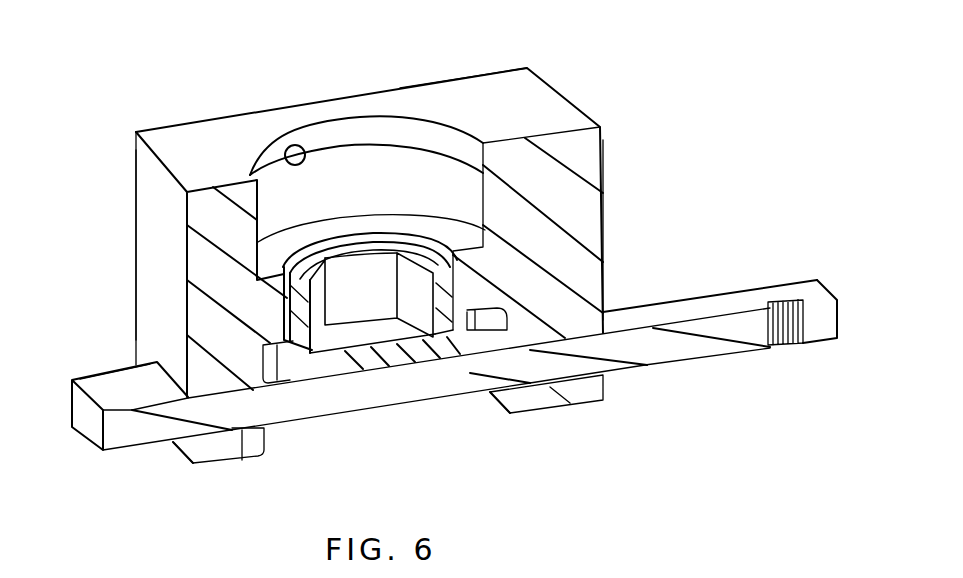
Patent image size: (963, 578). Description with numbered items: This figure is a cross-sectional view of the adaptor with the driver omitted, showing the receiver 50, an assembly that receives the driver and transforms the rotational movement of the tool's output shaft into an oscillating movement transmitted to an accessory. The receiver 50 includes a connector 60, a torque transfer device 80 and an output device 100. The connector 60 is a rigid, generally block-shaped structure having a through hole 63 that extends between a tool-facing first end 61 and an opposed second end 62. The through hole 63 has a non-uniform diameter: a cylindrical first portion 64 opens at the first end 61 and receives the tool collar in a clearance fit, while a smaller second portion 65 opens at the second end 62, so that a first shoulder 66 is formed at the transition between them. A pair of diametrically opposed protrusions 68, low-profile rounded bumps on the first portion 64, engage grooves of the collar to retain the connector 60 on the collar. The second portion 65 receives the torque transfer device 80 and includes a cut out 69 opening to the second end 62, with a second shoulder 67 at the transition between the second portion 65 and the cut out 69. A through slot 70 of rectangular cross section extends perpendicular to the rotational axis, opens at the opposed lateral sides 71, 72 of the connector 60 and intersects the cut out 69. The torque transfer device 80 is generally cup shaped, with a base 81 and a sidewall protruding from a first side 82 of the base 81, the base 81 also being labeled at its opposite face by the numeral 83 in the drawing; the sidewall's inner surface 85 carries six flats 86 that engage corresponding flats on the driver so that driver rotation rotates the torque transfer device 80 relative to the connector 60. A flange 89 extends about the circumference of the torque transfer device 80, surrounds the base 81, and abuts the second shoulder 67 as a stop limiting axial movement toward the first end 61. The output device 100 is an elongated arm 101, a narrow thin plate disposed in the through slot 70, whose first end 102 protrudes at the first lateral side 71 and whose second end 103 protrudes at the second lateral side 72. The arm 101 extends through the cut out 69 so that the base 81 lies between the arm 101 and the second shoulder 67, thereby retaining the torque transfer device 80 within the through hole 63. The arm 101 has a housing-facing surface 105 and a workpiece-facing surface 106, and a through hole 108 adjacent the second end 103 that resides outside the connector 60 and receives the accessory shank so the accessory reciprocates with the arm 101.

The receiver 50 is at (149, 74).
The connector 60 is at (563, 103).
The first end 61 is at (530, 78).
The second end 62 is at (555, 405).
The through hole 63 is at (366, 106).
The first portion 64 is at (388, 138).
The second portion 65 is at (403, 232).
The first shoulder 66 is at (365, 215).
The second shoulder 67 is at (507, 330).
The protrusions 68 is at (300, 145).
The cut out 69 is at (500, 410).
The through slot 70 is at (245, 430).
The first lateral side 71 is at (148, 231).
The second lateral side 72 is at (608, 160).
The torque transfer device 80 is at (321, 400).
The base 81 is at (320, 373).
The first side 82 is at (422, 333).
The floor surface 83 is at (400, 330).
The inner surface 85 is at (371, 268).
The flats 86 is at (337, 236).
The flange 89 is at (455, 360).
The output device 100 is at (723, 305).
The arm 101 is at (670, 347).
The first end 102 is at (85, 420).
The second end 103 is at (833, 292).
The housing-facing surface 105 is at (110, 383).
The workpiece-facing surface 106 is at (140, 447).
The through hole 108 is at (790, 343).